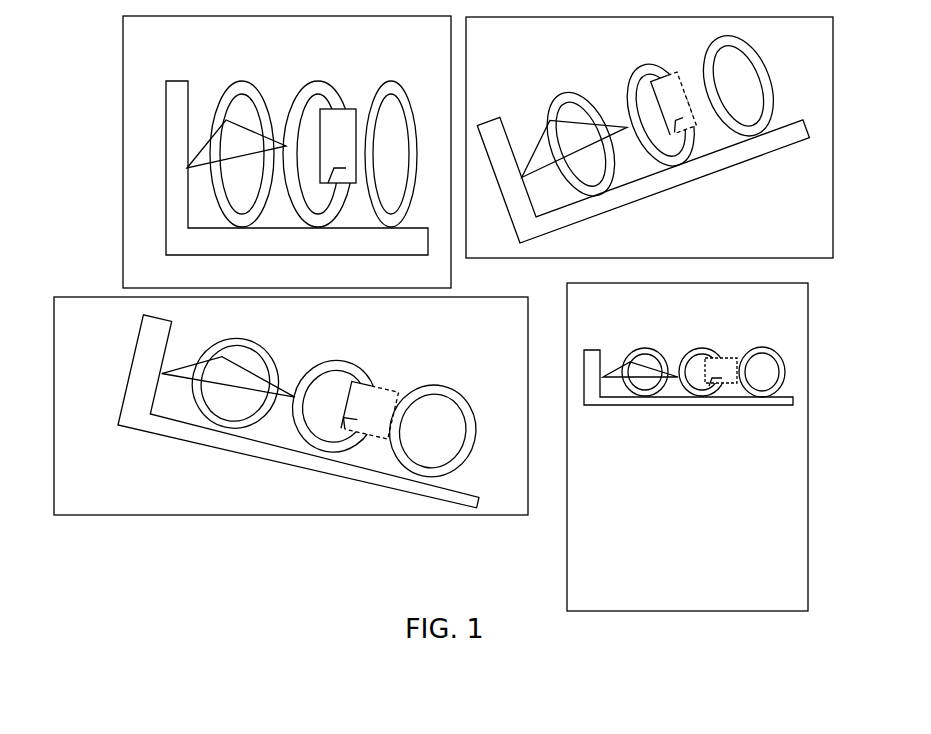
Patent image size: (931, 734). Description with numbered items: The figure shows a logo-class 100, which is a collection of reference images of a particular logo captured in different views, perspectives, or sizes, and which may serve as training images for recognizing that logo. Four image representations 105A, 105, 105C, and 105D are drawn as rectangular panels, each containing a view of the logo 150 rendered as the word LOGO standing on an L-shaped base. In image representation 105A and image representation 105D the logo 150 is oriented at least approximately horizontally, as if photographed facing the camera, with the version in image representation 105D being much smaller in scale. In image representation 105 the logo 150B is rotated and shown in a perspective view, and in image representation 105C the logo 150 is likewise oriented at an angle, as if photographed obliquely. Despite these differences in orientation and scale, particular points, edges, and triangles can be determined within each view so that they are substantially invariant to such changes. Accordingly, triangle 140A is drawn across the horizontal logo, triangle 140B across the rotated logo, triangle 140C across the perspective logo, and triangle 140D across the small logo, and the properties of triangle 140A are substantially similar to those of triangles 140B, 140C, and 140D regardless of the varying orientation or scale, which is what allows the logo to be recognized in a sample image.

The logo-class 100 is at (307, 585).
The image representation 105 is at (150, 515).
The image representation 105A is at (125, 185).
The image representation 105C is at (605, 55).
The image representation 105D is at (567, 548).
The triangle 140A is at (211, 135).
The triangle 140B is at (198, 366).
The triangle 140C is at (535, 150).
The triangle 140D is at (618, 368).
The logo 150 is at (165, 120).
The logo 150B is at (358, 480).